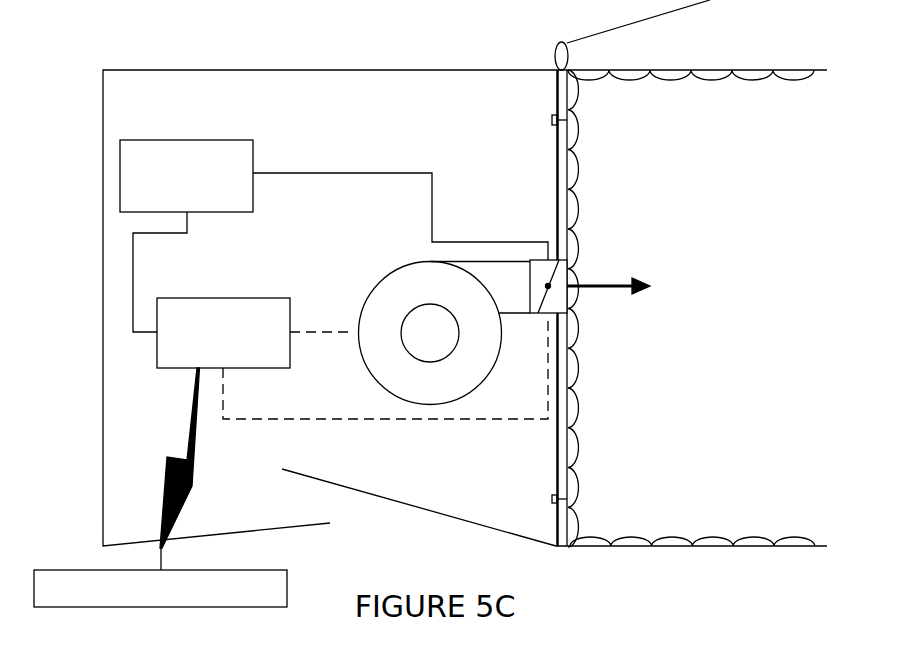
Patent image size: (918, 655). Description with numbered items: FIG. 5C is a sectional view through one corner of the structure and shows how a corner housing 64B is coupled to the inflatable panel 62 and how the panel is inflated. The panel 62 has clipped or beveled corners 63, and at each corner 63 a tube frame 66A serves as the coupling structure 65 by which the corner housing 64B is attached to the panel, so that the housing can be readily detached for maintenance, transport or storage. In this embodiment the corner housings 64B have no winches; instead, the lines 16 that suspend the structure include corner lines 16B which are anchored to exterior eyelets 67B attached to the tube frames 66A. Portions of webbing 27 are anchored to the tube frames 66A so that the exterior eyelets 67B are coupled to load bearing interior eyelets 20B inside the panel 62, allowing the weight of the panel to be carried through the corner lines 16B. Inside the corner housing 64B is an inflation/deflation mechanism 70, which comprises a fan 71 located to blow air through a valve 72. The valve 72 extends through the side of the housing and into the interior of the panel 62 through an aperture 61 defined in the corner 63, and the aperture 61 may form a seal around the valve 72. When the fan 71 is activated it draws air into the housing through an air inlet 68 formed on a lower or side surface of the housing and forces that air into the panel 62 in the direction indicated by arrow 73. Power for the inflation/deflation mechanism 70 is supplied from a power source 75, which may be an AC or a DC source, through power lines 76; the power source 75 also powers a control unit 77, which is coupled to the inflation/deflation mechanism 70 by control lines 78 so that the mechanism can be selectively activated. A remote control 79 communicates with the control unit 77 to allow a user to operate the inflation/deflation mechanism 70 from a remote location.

The lines 16 is at (595, 21).
The corner lines 16B is at (605, 25).
The inflatable panel 62 is at (700, 70).
The webbing 27 is at (671, 80).
The coupling structure 65 is at (564, 557).
The exterior eyelets 67B is at (555, 57).
The load bearing interior eyelets 20B is at (592, 88).
The tube frames 66A is at (567, 180).
The corners 63 is at (573, 353).
The corner housings 64B is at (352, 70).
The power source 75 is at (188, 140).
The power lines 76 is at (358, 173).
The control unit 77 is at (177, 369).
The fan 71 is at (369, 300).
The valve 72 is at (537, 260).
The aperture 61 is at (588, 265).
The arrow 73 is at (606, 280).
The control lines 78 is at (347, 335).
The remote control 79 is at (287, 590).
The air inlet 68 is at (348, 508).
The inflation/deflation mechanism 70 is at (456, 448).